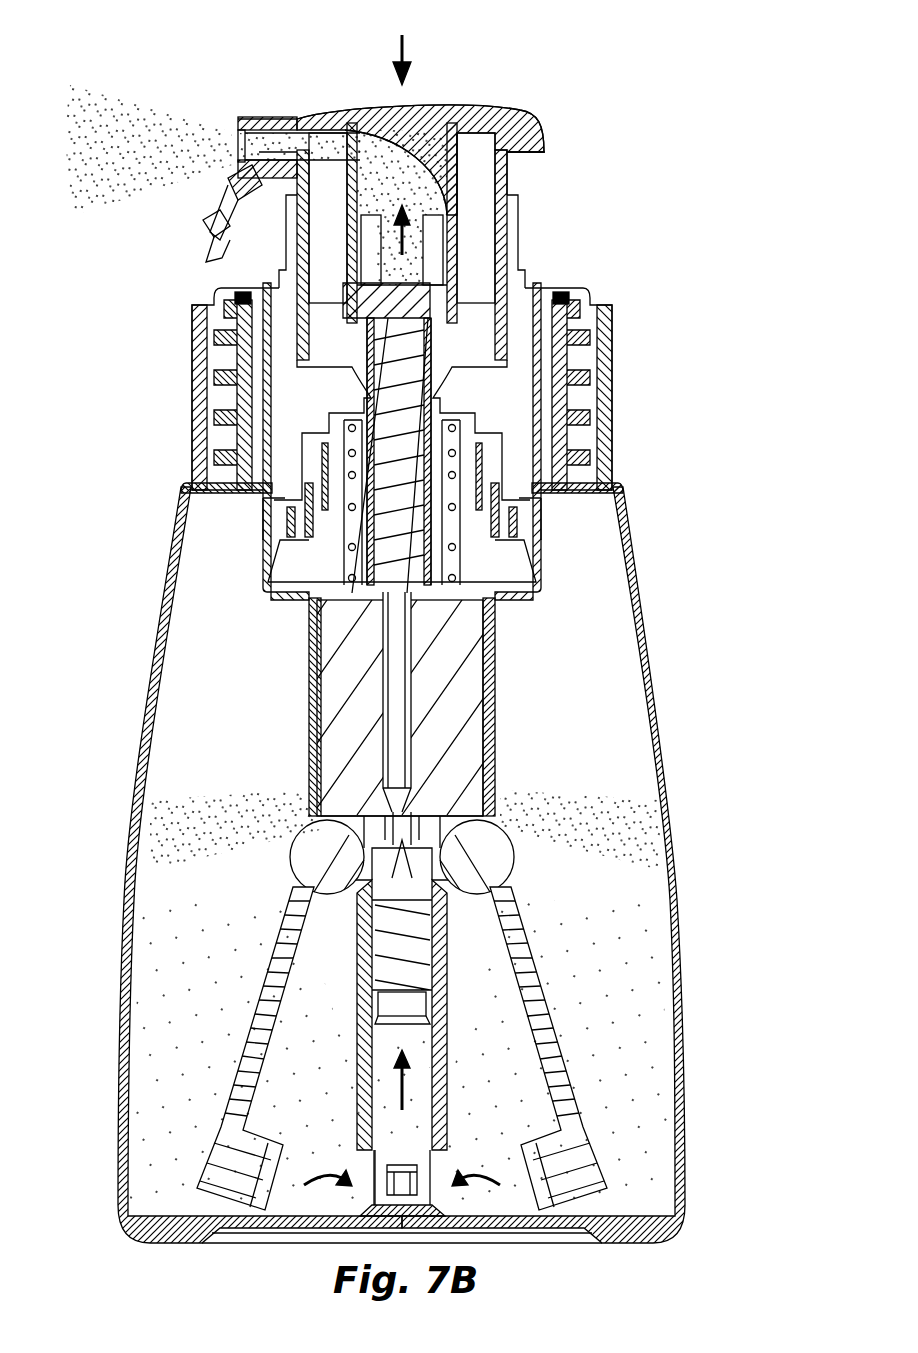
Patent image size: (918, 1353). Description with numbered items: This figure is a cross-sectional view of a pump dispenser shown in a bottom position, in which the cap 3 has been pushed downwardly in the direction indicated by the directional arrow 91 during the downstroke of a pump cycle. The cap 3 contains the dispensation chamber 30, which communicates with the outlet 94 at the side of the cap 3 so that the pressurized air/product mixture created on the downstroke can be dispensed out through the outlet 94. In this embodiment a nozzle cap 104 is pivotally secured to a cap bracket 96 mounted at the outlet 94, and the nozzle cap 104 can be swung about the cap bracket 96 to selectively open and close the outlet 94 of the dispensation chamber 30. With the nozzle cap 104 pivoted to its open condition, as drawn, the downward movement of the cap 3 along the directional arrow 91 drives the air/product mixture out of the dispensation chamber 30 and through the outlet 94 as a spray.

The cap 3 is at (545, 118).
The dispensation chamber 30 is at (410, 165).
The directional arrow 91 is at (398, 60).
The outlet 94 is at (238, 135).
The cap bracket 96 is at (250, 192).
The nozzle cap 104 is at (205, 248).